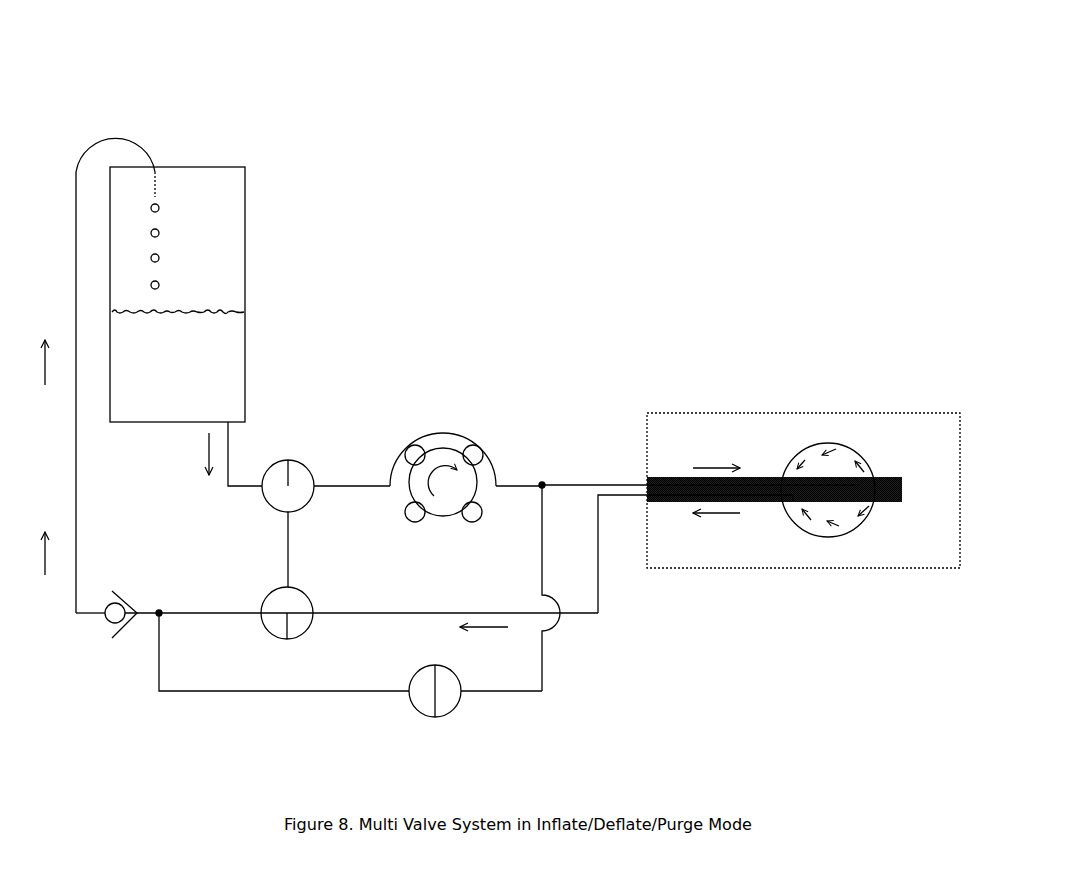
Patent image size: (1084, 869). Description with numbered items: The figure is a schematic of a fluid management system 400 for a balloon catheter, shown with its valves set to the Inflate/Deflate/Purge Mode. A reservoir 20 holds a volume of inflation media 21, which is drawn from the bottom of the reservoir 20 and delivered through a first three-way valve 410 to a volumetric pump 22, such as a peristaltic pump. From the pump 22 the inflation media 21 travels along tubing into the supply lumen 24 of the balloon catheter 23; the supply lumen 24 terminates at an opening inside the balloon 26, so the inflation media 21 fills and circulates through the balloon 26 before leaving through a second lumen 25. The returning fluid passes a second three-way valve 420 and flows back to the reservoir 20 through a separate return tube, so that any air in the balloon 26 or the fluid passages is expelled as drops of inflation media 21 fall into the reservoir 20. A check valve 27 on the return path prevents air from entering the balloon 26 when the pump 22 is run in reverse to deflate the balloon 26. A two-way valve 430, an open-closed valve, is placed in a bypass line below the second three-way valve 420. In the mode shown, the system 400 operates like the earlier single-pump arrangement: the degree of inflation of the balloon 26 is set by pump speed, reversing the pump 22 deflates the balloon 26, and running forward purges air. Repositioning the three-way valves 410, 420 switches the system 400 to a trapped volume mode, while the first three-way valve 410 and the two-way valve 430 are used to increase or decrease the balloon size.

The system 400 is at (562, 152).
The reservoir 20 is at (242, 276).
The inflation media 21 is at (183, 372).
The first three-way valve 410 is at (289, 462).
The volumetric pump 22 is at (438, 465).
The supply lumen 24 is at (585, 483).
The balloon catheter 23 is at (803, 473).
The balloon 26 is at (860, 458).
The second lumen 25 is at (598, 582).
The second three-way valve 420 is at (302, 627).
The check valve 27 is at (107, 625).
The two-way valve 430 is at (456, 707).